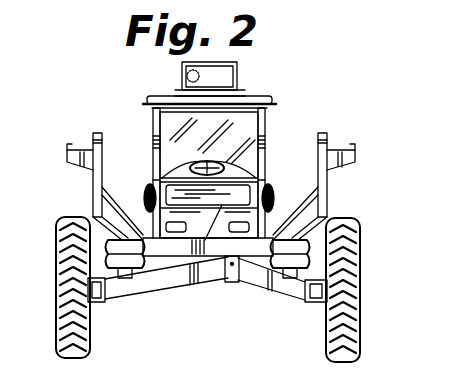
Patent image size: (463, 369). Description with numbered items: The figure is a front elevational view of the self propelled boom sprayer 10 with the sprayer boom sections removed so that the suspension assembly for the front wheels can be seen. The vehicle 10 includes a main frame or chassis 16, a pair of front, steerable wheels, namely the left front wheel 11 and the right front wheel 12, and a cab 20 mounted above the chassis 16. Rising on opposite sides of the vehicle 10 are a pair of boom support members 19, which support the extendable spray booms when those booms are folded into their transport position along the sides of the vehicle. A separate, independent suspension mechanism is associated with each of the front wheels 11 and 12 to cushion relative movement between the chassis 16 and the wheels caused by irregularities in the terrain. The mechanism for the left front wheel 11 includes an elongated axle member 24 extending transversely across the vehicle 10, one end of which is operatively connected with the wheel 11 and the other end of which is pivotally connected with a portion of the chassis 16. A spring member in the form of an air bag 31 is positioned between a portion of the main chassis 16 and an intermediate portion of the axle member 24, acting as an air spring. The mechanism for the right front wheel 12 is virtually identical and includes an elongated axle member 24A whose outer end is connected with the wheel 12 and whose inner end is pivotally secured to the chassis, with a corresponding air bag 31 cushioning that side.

The self propelled boom sprayer 10 is at (322, 95).
The left front wheel 11 is at (360, 316).
The right front wheel 12 is at (90, 332).
The main frame or chassis 16 is at (270, 195).
The boom support members 19 is at (93, 190).
The cab 20 is at (245, 90).
The axle member 24 is at (272, 285).
The axle member 24A is at (150, 284).
The air bag 31 is at (122, 237).